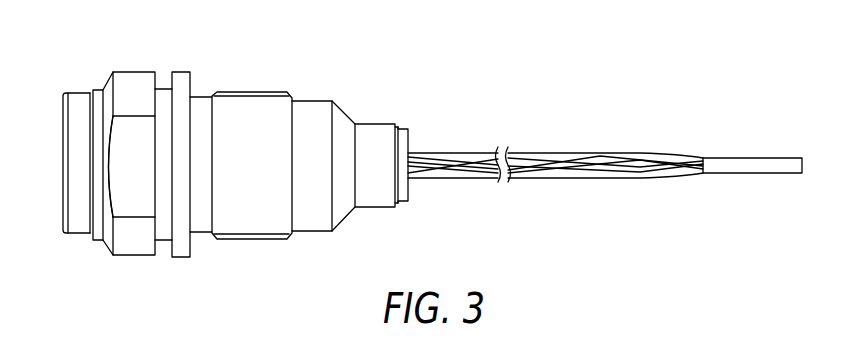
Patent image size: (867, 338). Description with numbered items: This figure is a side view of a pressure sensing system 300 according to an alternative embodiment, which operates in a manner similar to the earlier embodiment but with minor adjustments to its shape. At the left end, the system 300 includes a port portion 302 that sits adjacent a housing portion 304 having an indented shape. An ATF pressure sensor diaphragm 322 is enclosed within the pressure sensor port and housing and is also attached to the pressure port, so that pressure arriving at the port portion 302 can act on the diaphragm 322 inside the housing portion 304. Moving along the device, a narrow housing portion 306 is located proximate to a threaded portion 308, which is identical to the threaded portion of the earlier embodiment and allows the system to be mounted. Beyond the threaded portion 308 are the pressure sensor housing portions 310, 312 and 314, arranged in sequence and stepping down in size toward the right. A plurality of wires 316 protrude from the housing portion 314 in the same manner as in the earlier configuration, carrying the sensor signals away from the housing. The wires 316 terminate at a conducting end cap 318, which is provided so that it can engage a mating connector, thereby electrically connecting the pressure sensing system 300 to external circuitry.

The pressure sensing system 300 is at (502, 73).
The port portion 302 is at (80, 222).
The housing portion 304 is at (130, 197).
The narrow housing portion 306 is at (182, 82).
The threaded portion 308 is at (248, 242).
The pressure sensor housing portion 310 is at (312, 123).
The pressure sensor housing portion 312 is at (375, 182).
The pressure sensor housing portion 314 is at (412, 127).
The plurality of wires 316 is at (582, 167).
The conducting end cap 318 is at (752, 165).
The ATF pressure sensor diaphragm 322 is at (153, 165).